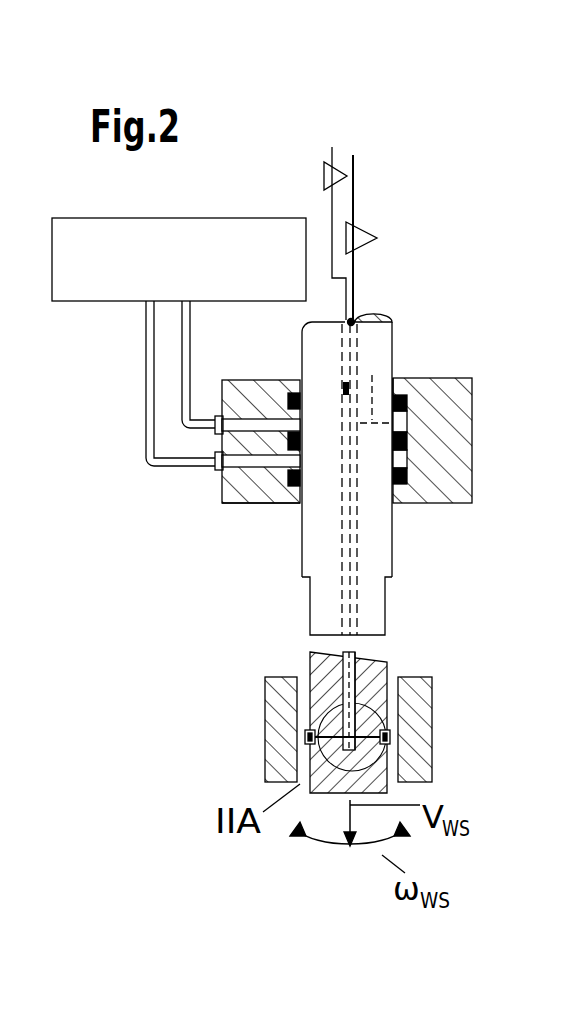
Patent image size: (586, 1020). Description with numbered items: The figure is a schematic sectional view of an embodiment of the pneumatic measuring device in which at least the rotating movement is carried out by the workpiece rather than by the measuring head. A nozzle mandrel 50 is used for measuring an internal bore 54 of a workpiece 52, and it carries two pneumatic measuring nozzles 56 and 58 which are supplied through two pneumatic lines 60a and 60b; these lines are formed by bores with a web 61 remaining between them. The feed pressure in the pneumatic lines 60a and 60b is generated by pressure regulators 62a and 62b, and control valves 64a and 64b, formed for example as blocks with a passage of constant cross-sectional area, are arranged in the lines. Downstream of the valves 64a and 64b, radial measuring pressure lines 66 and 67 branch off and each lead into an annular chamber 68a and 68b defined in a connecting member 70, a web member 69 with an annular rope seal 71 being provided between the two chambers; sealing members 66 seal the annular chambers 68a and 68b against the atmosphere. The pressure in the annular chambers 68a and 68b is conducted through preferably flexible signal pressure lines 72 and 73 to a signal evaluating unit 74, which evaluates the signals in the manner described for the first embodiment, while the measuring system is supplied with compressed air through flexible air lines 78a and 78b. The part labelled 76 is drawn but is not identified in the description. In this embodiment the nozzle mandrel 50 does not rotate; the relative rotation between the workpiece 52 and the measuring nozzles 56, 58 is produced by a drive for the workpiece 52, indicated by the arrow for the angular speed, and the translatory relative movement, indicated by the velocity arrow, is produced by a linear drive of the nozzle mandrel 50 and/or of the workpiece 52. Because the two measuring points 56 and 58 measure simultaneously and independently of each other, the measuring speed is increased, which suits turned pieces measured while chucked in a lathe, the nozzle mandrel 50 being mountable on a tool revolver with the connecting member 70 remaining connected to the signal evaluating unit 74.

The signal evaluating unit 74 is at (197, 217).
The pressure regulator 62a is at (323, 163).
The pressure regulator 62b is at (368, 236).
The flexible air line 78b is at (356, 190).
The flexible air line 78a is at (348, 320).
The web 61 is at (377, 573).
The control valve 64b is at (356, 362).
The radial measuring pressure line 67 is at (383, 372).
The control valve 64a is at (345, 388).
The connecting member 70 is at (458, 487).
The housing part 76 is at (407, 393).
The annular chamber 68b is at (407, 424).
The web member 69 is at (407, 437).
The annular chamber 68a is at (296, 474).
The radial measuring pressure line 66 is at (270, 505).
The signal pressure line 73 is at (146, 408).
The signal pressure line 72 is at (182, 424).
The annular rope seal 71 is at (215, 440).
The nozzle mandrel 50 is at (370, 680).
The pneumatic line 60a is at (342, 668).
The pneumatic line 60b is at (365, 664).
The pneumatic measuring nozzle 58 is at (305, 737).
The pneumatic measuring nozzle 56 is at (389, 733).
The workpiece 52 is at (270, 768).
The internal bore 54 is at (402, 756).